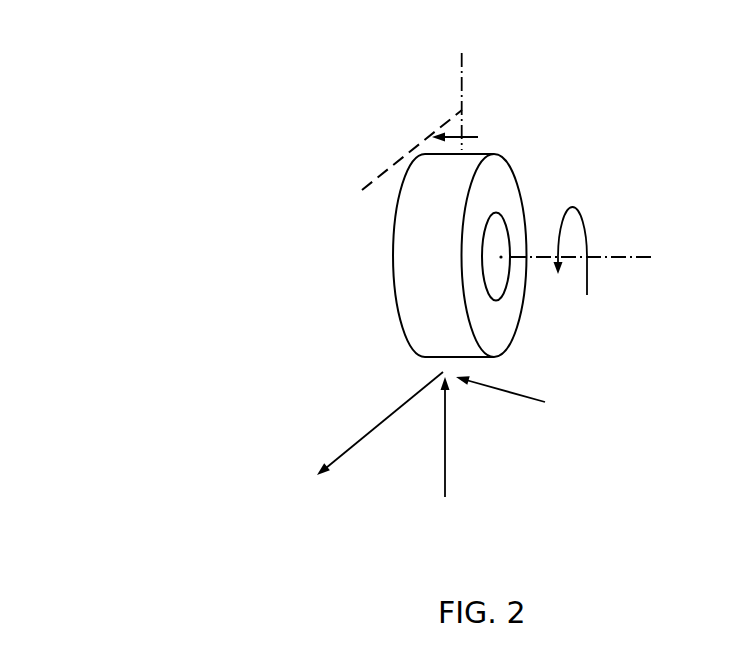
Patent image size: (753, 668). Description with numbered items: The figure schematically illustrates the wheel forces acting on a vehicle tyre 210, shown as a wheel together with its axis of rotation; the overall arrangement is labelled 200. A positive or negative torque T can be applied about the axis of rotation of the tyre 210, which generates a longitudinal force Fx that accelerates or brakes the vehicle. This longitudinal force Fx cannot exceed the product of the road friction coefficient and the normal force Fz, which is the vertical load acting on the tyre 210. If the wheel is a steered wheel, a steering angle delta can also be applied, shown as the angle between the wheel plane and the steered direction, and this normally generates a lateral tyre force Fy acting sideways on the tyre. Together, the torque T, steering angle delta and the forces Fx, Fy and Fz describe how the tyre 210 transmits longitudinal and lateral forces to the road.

The tire force and moment coordinate system 200 is at (130, 75).
The vehicle tyre 210 is at (417, 254).
The steering angle delta is at (424, 121).
The torque T is at (566, 258).
The longitudinal force Fx is at (355, 434).
The lateral tyre force Fy is at (522, 388).
The normal force Fz is at (463, 447).